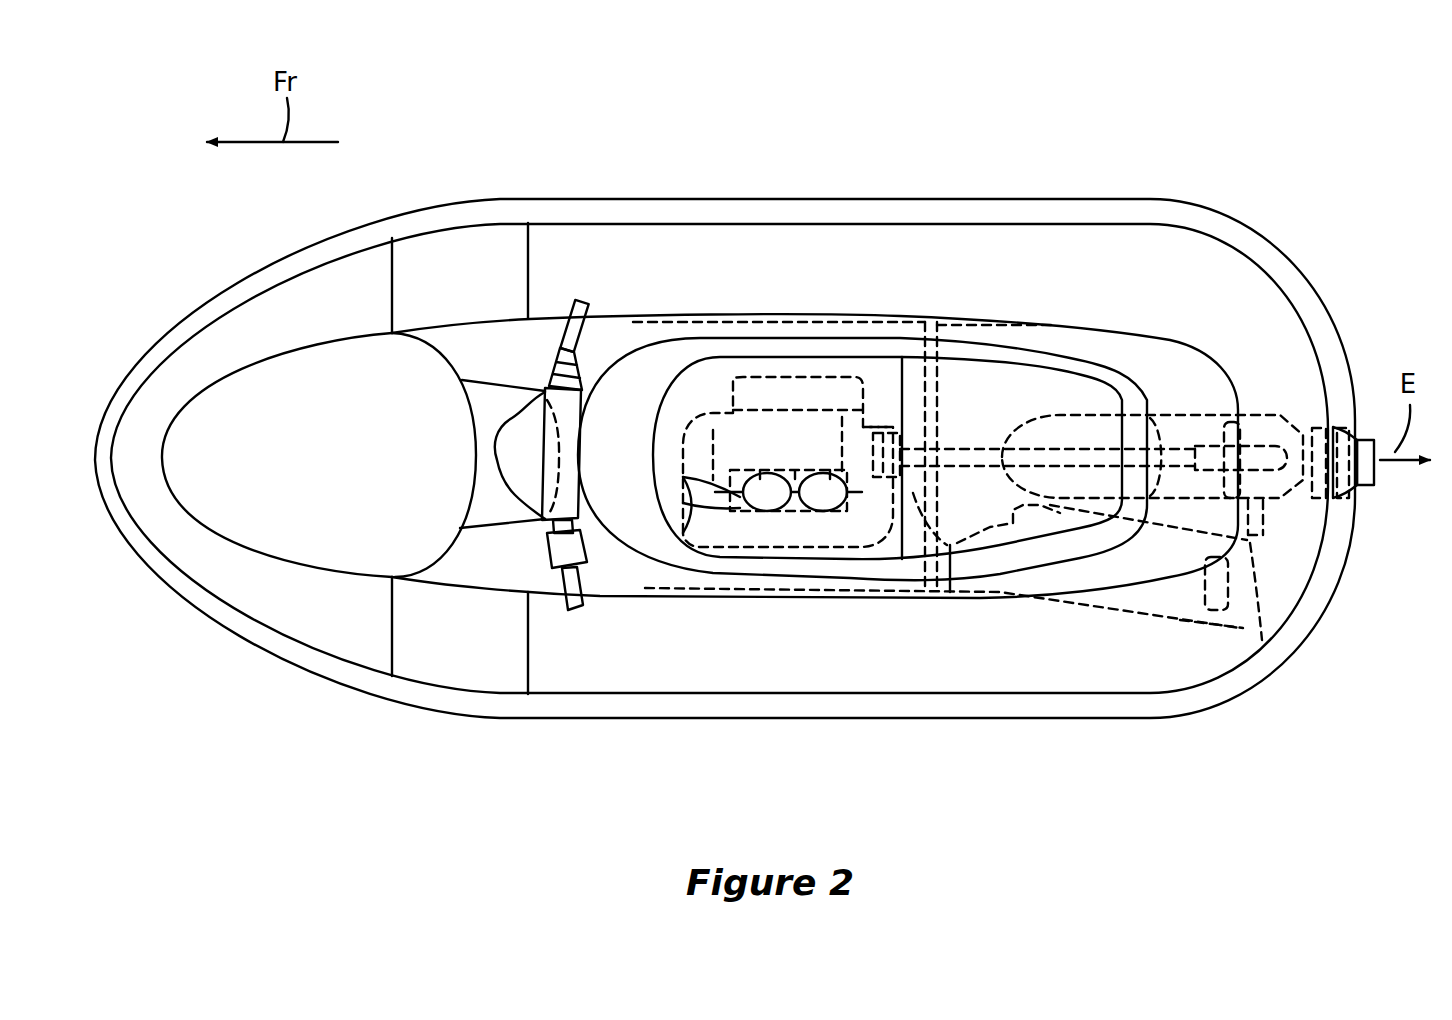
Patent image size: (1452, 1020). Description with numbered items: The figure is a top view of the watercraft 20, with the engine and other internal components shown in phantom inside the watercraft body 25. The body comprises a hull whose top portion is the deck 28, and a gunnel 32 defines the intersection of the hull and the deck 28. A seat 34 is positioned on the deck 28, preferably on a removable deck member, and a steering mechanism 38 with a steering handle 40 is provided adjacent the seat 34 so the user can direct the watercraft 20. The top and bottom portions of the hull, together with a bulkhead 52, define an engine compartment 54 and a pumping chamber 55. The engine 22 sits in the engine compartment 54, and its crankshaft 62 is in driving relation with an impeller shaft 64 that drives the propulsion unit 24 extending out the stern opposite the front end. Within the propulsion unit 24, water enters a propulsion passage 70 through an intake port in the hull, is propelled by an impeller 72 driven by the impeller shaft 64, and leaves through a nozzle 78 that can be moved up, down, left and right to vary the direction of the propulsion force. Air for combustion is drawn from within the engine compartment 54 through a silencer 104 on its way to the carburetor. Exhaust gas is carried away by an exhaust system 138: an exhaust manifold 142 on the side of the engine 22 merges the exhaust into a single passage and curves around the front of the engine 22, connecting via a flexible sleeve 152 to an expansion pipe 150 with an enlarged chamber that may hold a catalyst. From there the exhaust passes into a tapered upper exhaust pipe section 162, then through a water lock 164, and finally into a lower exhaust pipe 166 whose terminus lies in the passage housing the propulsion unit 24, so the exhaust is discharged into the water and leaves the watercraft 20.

The watercraft 20 is at (1187, 153).
The watercraft body 25 is at (1297, 197).
The deck 28 is at (693, 248).
The gunnel 32 is at (613, 199).
The engine compartment 54 is at (847, 245).
The pumping chamber 55 is at (1015, 233).
The steering handle 40 is at (574, 303).
The steering mechanism 38 is at (515, 498).
The engine 22 is at (693, 397).
The silencer 104 is at (777, 370).
The expansion pipe 150 is at (827, 410).
The flexible sleeve 152 is at (750, 515).
The exhaust system 138 is at (770, 550).
The exhaust manifold 142 is at (800, 547).
The seat 34 is at (858, 533).
The bulkhead 52 is at (940, 387).
The upper exhaust pipe section 162 is at (972, 588).
The impeller shaft 64 is at (980, 457).
The propulsion unit 24 is at (1163, 413).
The propulsion passage 70 is at (1180, 450).
The nozzle 78 is at (1363, 478).
The impeller 72 is at (1245, 532).
The lower exhaust pipe 166 is at (1228, 585).
The water lock 164 is at (1130, 617).
The crankshaft 62 is at (1062, 465).